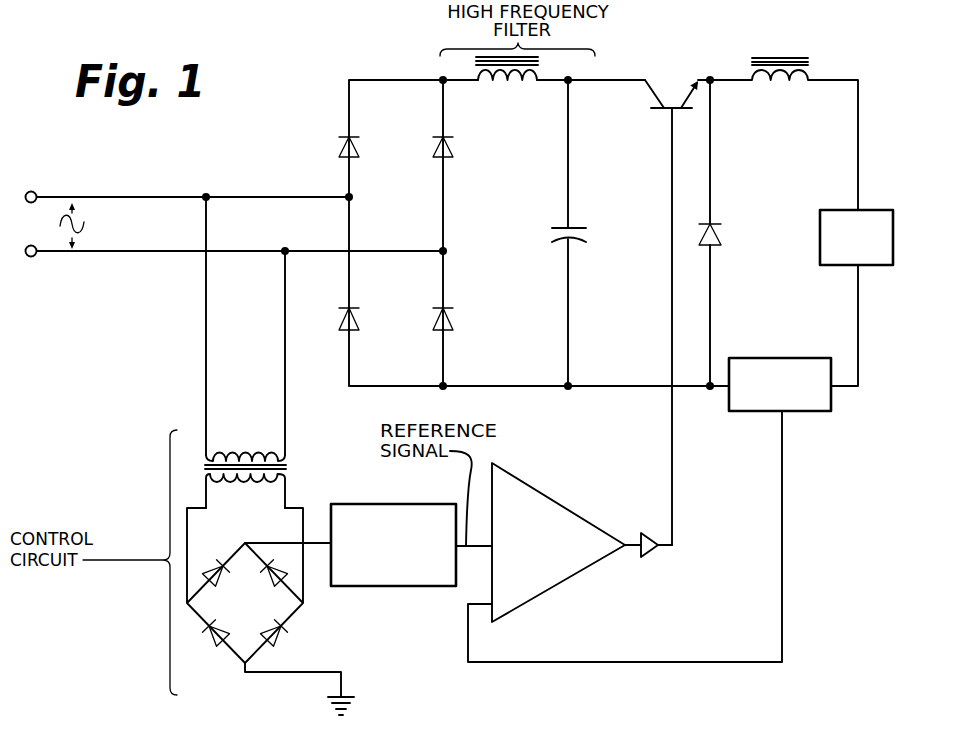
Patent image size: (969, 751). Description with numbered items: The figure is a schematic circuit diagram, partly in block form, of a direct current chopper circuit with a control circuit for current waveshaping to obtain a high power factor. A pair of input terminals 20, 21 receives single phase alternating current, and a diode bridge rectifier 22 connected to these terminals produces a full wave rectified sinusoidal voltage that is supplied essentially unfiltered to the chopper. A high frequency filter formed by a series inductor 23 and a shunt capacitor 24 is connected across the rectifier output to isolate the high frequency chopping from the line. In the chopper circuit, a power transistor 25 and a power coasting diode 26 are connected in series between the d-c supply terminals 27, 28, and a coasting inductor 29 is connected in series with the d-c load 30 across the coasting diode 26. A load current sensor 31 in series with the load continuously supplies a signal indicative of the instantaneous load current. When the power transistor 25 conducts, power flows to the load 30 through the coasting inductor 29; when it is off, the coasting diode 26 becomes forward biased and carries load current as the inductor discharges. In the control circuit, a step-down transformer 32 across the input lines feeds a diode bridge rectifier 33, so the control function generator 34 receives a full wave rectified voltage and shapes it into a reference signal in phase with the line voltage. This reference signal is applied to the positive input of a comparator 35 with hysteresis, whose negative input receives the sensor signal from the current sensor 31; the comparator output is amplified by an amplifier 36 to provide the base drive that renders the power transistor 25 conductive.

The input terminal 20 is at (36, 192).
The input terminal 21 is at (35, 256).
The diode bridge rectifier 22 is at (407, 216).
The series inductor 23 is at (510, 88).
The shunt capacitor 24 is at (573, 227).
The power transistor 25 is at (663, 110).
The power coasting diode 26 is at (715, 223).
The d-c supply terminal 27 is at (620, 80).
The d-c supply terminal 28 is at (605, 386).
The coasting inductor 29 is at (808, 72).
The d-c load 30 is at (880, 210).
The load current sensor 31 is at (790, 358).
The step-down transformer 32 is at (292, 468).
The diode bridge rectifier 33 is at (258, 612).
The control function generator 34 is at (390, 503).
The comparator 35 is at (578, 508).
The amplifier 36 is at (652, 555).